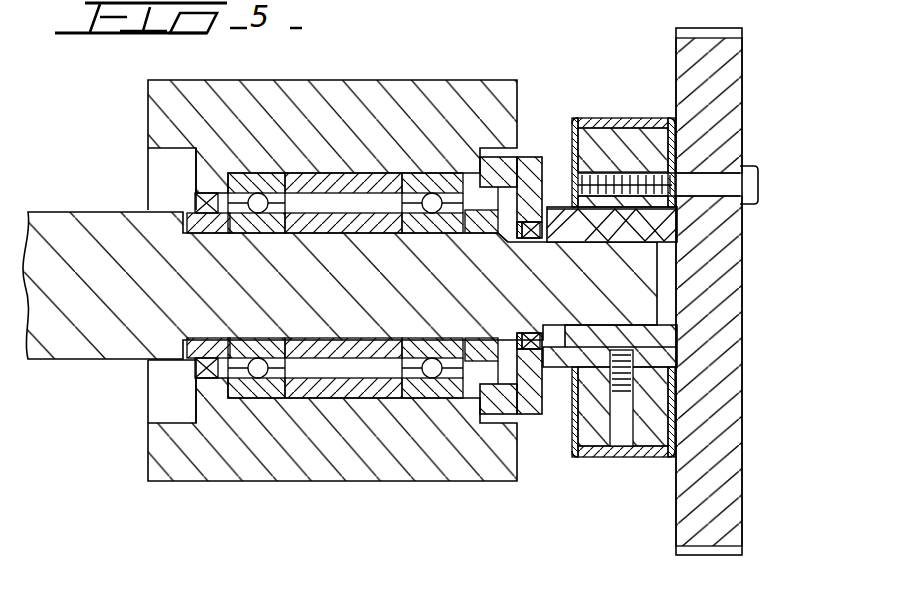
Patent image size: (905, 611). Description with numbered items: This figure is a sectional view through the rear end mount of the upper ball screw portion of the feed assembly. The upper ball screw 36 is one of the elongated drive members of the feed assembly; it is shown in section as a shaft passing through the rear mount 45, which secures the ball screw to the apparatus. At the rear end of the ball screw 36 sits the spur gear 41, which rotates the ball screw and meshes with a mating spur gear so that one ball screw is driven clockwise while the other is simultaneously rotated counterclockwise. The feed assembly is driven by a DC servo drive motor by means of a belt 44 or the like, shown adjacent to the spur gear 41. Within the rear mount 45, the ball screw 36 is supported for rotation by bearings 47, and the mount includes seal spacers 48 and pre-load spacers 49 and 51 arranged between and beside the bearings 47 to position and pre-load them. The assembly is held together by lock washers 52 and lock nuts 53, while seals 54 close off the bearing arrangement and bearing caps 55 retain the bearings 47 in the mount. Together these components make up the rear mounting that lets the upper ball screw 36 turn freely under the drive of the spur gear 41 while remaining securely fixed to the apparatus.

The upper ball screw 36 is at (72, 328).
The spur gear 41 is at (685, 507).
The belt 44 is at (607, 123).
The rear mount 45 is at (454, 470).
The bearings 47 is at (407, 390).
The seal spacers 48 is at (199, 372).
The pre-load spacer 49 is at (382, 227).
The pre-load spacer 51 is at (347, 173).
The lock washers 52 is at (462, 175).
The lock nuts 53 is at (482, 210).
The seals 54 is at (198, 373).
The bearing caps 55 is at (532, 163).